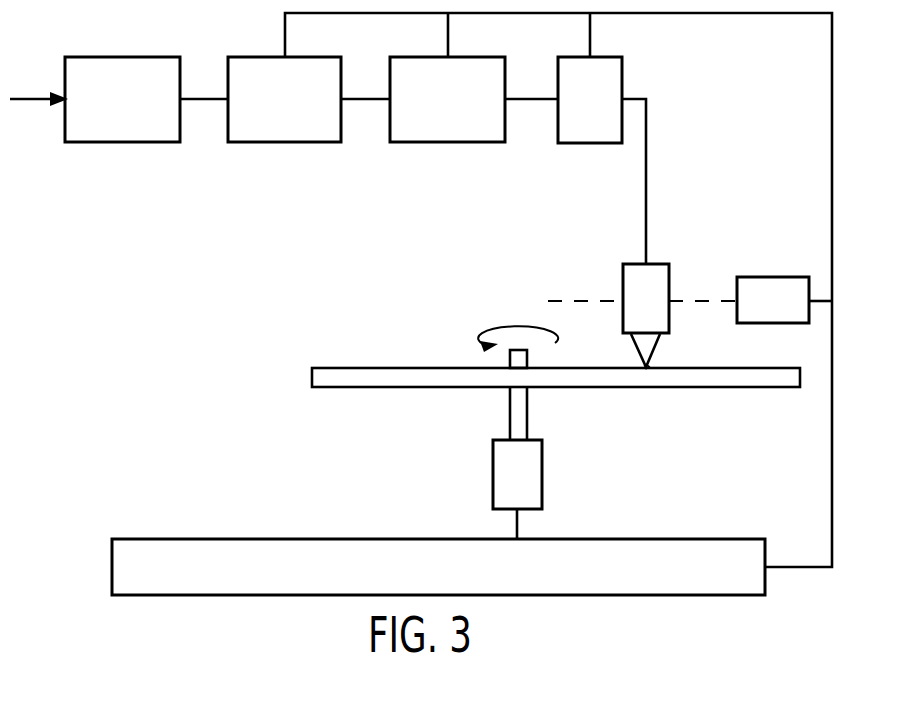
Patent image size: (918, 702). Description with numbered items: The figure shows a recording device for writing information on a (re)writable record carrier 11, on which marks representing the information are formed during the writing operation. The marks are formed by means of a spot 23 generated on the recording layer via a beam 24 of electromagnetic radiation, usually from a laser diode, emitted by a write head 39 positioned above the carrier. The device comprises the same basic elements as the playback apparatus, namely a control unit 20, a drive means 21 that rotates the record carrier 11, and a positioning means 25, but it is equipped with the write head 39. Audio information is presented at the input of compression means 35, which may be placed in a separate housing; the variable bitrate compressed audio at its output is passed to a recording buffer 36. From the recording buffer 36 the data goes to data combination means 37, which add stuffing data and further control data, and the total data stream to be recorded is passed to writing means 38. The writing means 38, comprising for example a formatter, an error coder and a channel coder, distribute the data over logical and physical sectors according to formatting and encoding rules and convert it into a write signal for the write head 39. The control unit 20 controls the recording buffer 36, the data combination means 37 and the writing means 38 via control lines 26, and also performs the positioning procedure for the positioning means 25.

The record carrier 11 is at (757, 388).
The control unit 20 is at (729, 545).
The drive means 21 is at (538, 463).
The spot 23 is at (650, 365).
The beam 24 is at (632, 345).
The positioning means 25 is at (773, 285).
The control lines 26 is at (832, 110).
The compression means 35 is at (120, 128).
The recording buffer 36 is at (283, 133).
The data combination means 37 is at (440, 133).
The writing means 38 is at (587, 137).
The write head 39 is at (622, 283).